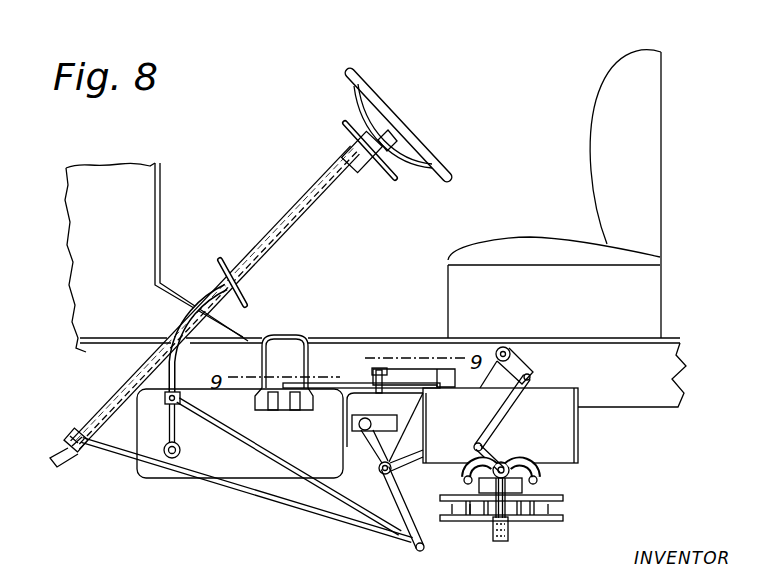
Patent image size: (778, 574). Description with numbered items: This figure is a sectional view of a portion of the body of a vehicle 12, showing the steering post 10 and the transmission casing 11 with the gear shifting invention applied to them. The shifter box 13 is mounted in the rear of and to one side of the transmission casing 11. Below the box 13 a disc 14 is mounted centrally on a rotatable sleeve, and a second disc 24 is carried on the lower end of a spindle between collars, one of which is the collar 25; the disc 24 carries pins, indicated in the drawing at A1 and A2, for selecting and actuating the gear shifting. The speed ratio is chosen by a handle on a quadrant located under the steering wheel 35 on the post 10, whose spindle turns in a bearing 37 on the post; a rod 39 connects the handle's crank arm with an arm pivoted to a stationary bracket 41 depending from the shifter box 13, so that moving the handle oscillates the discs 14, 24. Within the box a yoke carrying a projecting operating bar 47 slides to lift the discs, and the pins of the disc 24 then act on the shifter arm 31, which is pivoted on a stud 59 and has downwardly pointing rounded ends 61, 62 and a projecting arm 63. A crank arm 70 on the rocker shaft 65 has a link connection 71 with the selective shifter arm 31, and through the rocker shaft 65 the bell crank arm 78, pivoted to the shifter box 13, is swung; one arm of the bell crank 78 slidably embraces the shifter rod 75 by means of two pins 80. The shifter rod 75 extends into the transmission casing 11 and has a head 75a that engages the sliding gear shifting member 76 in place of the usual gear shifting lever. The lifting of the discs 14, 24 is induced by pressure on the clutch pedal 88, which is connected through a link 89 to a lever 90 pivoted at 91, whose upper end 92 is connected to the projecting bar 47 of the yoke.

The steering post 10 is at (285, 231).
The transmission casing 11 is at (222, 462).
The vehicle 12 is at (633, 363).
The shifter box 13 is at (560, 433).
The disc 14 is at (565, 499).
The disc 24 is at (565, 519).
The collar 25 is at (452, 508).
The shifter arm 31 is at (510, 462).
The steering wheel 35 is at (413, 138).
The bearing 37 is at (64, 438).
The rod 39 is at (290, 510).
The stationary bracket 41 is at (496, 510).
The projecting operating bar 47 is at (392, 425).
The stud 59 is at (501, 462).
The rounded end 61 is at (463, 481).
The rounded end 62 is at (540, 480).
The projecting arm 63 is at (485, 458).
The rocker shaft 65 is at (503, 346).
The crank arm 70 is at (515, 368).
The link connection 71 is at (503, 413).
The shifter rod 75 is at (328, 382).
The head 75a is at (282, 395).
The sliding gear shifting member 76 is at (286, 409).
The bell crank arm 78 is at (416, 369).
The pins 80 is at (377, 382).
The clutch pedal 88 is at (246, 299).
The link 89 is at (270, 455).
The lever 90 is at (402, 502).
The pivot 91 is at (388, 462).
The upper end 92 is at (372, 438).
The position A1 is at (548, 512).
The position A2 is at (469, 510).